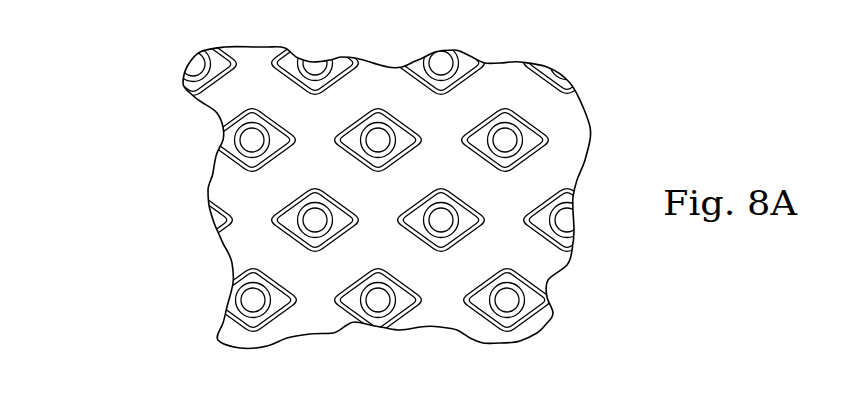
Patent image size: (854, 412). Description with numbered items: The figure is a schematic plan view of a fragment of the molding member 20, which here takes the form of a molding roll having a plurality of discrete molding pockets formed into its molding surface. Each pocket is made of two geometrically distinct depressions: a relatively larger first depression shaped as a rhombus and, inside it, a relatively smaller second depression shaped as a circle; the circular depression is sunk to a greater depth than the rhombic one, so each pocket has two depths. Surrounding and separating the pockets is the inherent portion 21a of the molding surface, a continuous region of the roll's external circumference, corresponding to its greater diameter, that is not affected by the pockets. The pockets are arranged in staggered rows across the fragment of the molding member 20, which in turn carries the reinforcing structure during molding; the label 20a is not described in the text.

The molding member 20 is at (150, 108).
The panel surface 20a is at (147, 165).
The inherent portion of the molding surface 21a is at (525, 256).